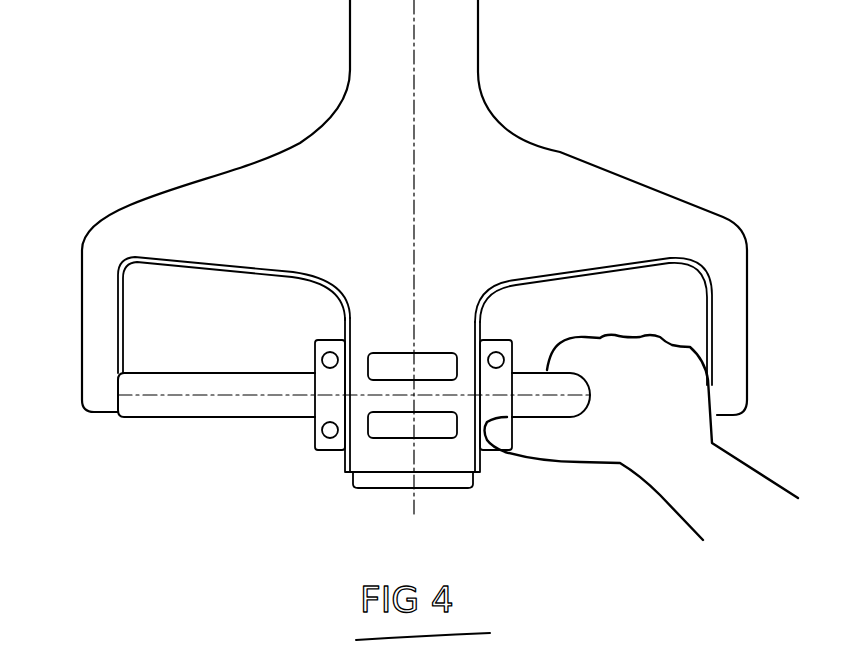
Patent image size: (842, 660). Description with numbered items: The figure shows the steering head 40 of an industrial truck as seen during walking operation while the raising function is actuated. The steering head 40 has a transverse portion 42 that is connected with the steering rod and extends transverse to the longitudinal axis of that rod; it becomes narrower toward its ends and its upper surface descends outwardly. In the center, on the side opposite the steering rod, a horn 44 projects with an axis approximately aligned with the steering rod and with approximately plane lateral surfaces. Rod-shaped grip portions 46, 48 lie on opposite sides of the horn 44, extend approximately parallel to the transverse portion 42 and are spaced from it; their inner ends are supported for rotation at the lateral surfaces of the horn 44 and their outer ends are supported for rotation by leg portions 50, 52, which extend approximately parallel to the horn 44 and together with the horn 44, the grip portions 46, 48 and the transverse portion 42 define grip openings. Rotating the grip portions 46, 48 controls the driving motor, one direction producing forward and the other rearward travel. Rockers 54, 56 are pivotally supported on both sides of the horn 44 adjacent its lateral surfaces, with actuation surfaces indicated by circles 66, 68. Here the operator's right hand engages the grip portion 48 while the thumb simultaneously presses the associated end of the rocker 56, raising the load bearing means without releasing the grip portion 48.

The steering head 40 is at (605, 148).
The transverse portion 42 is at (365, 213).
The horn 44 is at (430, 342).
The grip portion 46 is at (175, 408).
The grip portion 48 is at (530, 380).
The leg portion 50 is at (85, 314).
The leg portion 52 is at (735, 310).
The rocker 54 is at (323, 452).
The rocker 56 is at (497, 450).
The actuation surface 66 is at (313, 422).
The actuation surface 68 is at (323, 350).